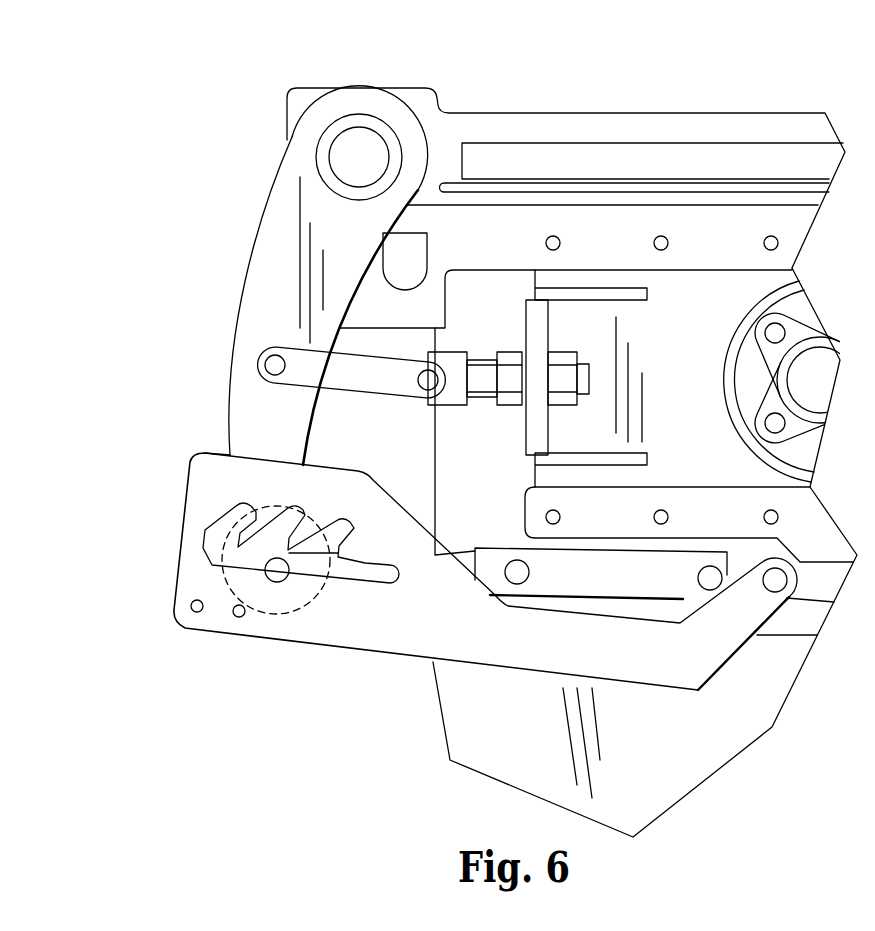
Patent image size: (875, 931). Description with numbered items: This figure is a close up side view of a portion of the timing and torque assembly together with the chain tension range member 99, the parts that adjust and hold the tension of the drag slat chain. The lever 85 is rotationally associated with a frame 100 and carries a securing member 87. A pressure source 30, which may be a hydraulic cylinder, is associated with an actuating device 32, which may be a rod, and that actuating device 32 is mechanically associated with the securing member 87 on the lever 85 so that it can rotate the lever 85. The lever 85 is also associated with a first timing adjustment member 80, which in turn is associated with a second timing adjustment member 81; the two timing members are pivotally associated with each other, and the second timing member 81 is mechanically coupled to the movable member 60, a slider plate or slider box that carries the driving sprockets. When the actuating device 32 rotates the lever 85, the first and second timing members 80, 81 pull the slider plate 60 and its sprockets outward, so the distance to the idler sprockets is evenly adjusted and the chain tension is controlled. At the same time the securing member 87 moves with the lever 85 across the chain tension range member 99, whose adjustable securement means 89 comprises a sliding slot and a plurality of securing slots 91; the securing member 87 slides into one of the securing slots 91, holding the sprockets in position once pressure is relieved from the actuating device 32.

The frame 100 is at (457, 123).
The movable member 60 is at (662, 350).
The lever 85 is at (273, 240).
The second timing adjustment member 81 is at (300, 378).
The first timing adjustment member 80 is at (430, 403).
The chain tension range member 99 is at (313, 625).
The securing slots 91 is at (207, 545).
The adjustable securement means 89 is at (212, 562).
The securing member 87 is at (277, 583).
The actuating device 32 is at (468, 563).
The pressure source 30 is at (608, 582).